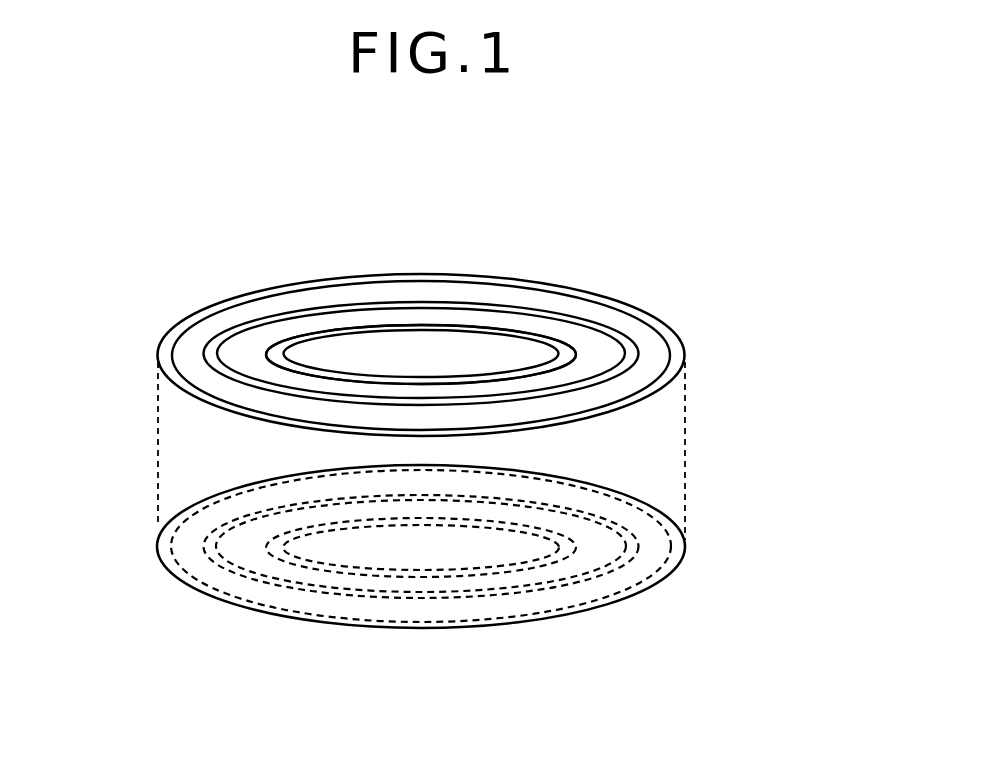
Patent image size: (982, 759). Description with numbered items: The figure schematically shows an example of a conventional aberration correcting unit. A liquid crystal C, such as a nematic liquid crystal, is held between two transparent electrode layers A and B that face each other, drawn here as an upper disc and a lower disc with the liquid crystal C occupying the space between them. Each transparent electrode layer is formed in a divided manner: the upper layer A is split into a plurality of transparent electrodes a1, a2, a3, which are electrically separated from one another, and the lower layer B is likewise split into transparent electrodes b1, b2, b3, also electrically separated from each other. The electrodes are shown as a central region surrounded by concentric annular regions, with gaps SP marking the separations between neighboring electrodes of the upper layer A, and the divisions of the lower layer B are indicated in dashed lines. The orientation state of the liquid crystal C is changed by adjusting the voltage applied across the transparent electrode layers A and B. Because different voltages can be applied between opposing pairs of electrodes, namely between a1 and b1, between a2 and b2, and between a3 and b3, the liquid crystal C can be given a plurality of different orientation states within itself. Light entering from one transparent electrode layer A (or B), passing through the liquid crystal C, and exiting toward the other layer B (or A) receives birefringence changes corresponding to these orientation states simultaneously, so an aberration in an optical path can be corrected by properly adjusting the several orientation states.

The transparent electrode layer A is at (409, 299).
The transparent electrode a1 is at (487, 348).
The transparent electrode a2 is at (308, 322).
The transparent electrode a3 is at (427, 290).
The gap between legs SP is at (215, 342).
The transparent electrode layer B is at (421, 593).
The transparent electrode b1 is at (488, 557).
The transparent electrode b2 is at (328, 580).
The transparent electrode b3 is at (422, 615).
The liquid crystal C is at (652, 443).